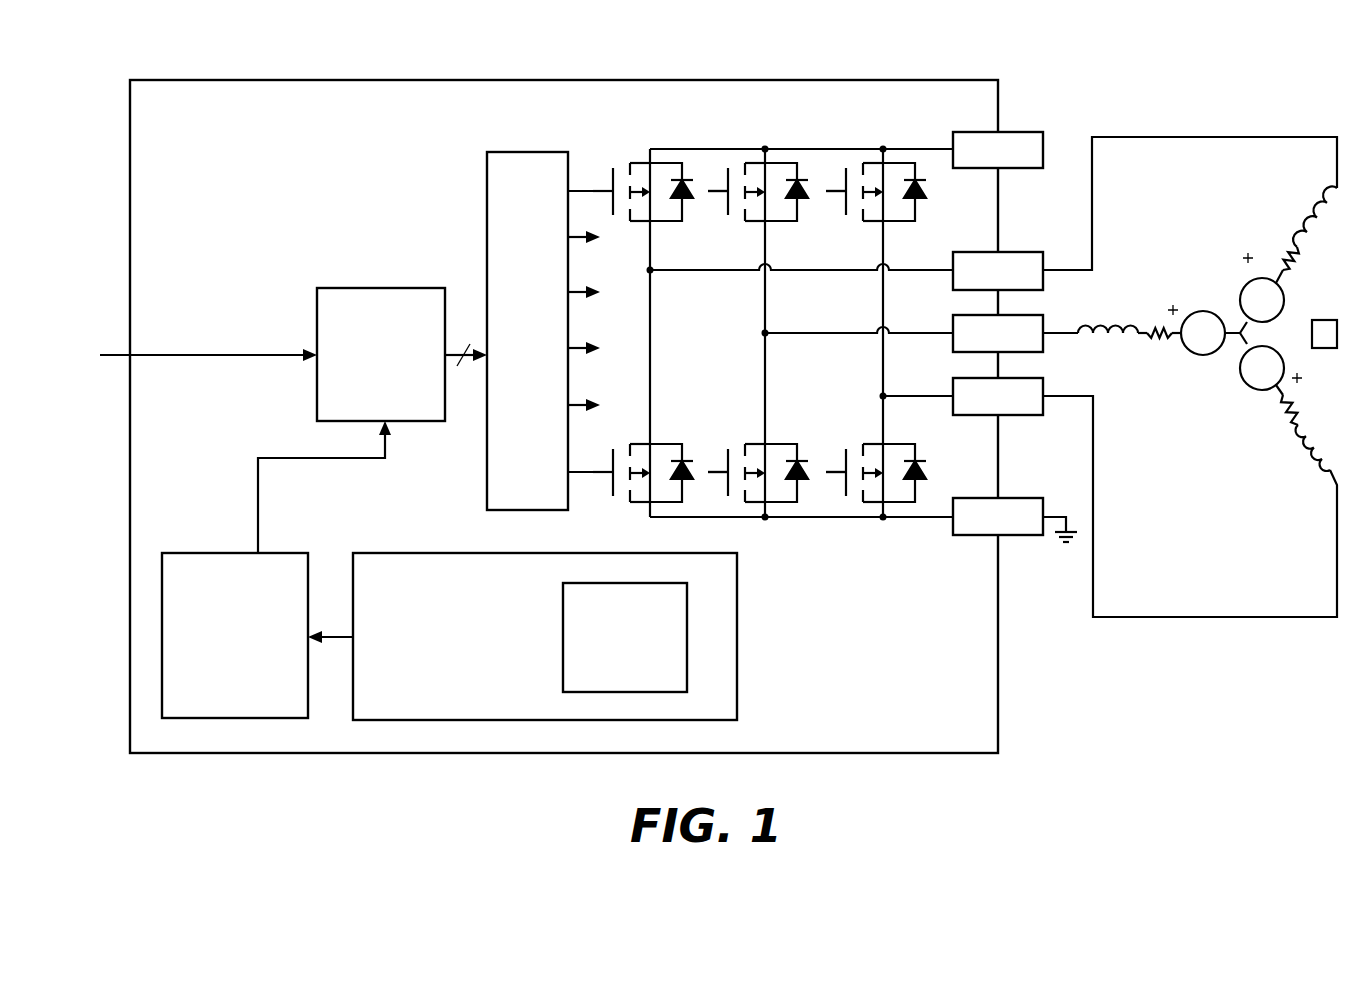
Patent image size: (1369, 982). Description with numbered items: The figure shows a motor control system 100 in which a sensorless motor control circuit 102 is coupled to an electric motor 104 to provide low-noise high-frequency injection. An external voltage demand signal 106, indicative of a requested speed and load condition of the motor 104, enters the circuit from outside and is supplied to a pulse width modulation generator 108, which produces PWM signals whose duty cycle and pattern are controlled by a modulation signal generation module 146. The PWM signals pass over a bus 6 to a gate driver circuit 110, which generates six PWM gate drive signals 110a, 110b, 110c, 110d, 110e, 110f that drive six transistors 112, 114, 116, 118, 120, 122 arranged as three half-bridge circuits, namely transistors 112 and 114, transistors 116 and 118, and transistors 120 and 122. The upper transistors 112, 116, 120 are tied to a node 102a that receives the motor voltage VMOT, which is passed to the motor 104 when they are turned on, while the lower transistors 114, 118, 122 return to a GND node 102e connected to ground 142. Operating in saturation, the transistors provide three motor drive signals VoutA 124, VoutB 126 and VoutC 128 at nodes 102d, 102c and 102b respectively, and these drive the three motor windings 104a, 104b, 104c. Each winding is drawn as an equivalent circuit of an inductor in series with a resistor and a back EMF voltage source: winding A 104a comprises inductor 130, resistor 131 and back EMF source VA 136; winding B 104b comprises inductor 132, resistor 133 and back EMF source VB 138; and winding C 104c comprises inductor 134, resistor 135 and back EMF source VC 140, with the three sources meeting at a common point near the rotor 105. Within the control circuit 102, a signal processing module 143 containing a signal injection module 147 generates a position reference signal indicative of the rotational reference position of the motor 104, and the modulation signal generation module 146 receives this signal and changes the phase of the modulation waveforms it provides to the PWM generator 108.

The motor control system 100 is at (1014, 50).
The motor control circuit 102 is at (564, 416).
The node 102a is at (968, 132).
The node 102b is at (1023, 251).
The node 102c is at (953, 323).
The node 102d is at (953, 385).
The GND terminal 102e is at (968, 498).
The electric motor 104 is at (1203, 344).
The winding A 104a is at (1284, 478).
The winding 104b is at (1172, 288).
The winding 104c is at (1270, 225).
The rotor / magnet 105 is at (1337, 353).
The external voltage demand signal 106 is at (113, 358).
The pulse width modulation generator 108 is at (381, 354).
The gate driver circuit 110 is at (527, 331).
The PWM gate drive signal 110a is at (583, 190).
The PWM gate drive signal 110b is at (577, 242).
The PWM gate drive signal 110c is at (577, 297).
The PWM gate drive signal 110d is at (577, 353).
The PWM gate drive signal 110e is at (577, 410).
The PWM gate drive signal 110f is at (588, 476).
The transistor 112 is at (669, 224).
The transistor 114 is at (668, 443).
The transistor 116 is at (784, 224).
The transistor 118 is at (775, 443).
The transistor 120 is at (903, 224).
The transistor 122 is at (903, 443).
The motor drive signal VoutA 124 is at (1097, 593).
The motor drive signal VoutB 126 is at (1058, 330).
The motor drive signal VoutC 128 is at (1092, 150).
The inductor 130 is at (1317, 473).
The resistor 131 is at (1287, 408).
The winding inductance 132 is at (1110, 342).
The phase B winding resistance 133 is at (1152, 342).
The phase C winding inductance 134 is at (1313, 217).
The phase C winding resistance 135 is at (1295, 260).
The back EMF voltage source VA 136 is at (1257, 395).
The phase B back-EMF source VB 138 is at (1185, 355).
The phase C back-EMF source VC 140 is at (1287, 290).
The ground 142 is at (1057, 512).
The signal processing module 143 is at (522, 636).
The modulation signal generation module 146 is at (276, 569).
The signal injection module 147 is at (625, 637).
The six-line bus 6 is at (466, 341).